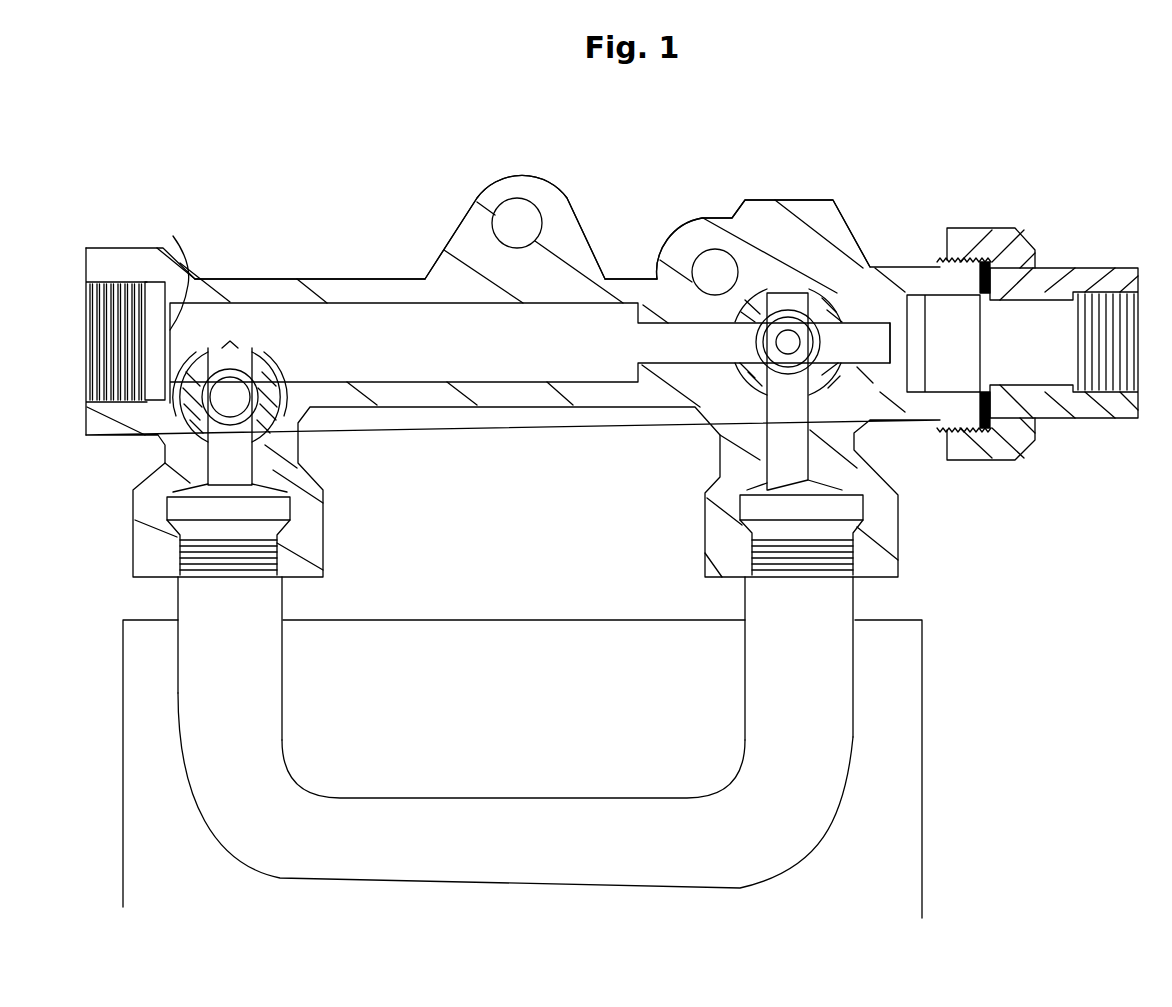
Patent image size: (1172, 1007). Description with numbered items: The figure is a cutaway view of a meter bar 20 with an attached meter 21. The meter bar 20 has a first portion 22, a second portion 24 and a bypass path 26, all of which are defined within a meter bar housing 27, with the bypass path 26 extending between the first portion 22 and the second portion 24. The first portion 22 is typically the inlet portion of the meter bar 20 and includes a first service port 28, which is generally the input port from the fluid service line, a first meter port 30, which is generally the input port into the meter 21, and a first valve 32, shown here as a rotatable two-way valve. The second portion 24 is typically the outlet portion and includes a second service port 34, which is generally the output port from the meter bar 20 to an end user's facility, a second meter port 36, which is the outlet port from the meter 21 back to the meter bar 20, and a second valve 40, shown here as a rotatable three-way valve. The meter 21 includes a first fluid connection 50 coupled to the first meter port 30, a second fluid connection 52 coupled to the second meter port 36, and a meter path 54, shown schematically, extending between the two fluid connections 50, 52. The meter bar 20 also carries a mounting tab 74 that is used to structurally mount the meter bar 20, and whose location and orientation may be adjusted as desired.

The meter bar 20 is at (311, 200).
The meter 21 is at (896, 657).
The first portion 22 is at (221, 256).
The second portion 24 is at (881, 251).
The bypass path 26 is at (392, 330).
The meter bar housing 27 is at (362, 256).
The first service port 28 is at (173, 236).
The first meter port 30 is at (232, 482).
The first valve 32 is at (294, 412).
The second service port 34 is at (890, 347).
The second meter port 36 is at (760, 476).
The second valve 40 is at (855, 436).
The first fluid connection 50 is at (195, 592).
The second fluid connection 52 is at (830, 602).
The meter path 54 is at (267, 877).
The mounting tab 74 is at (560, 206).